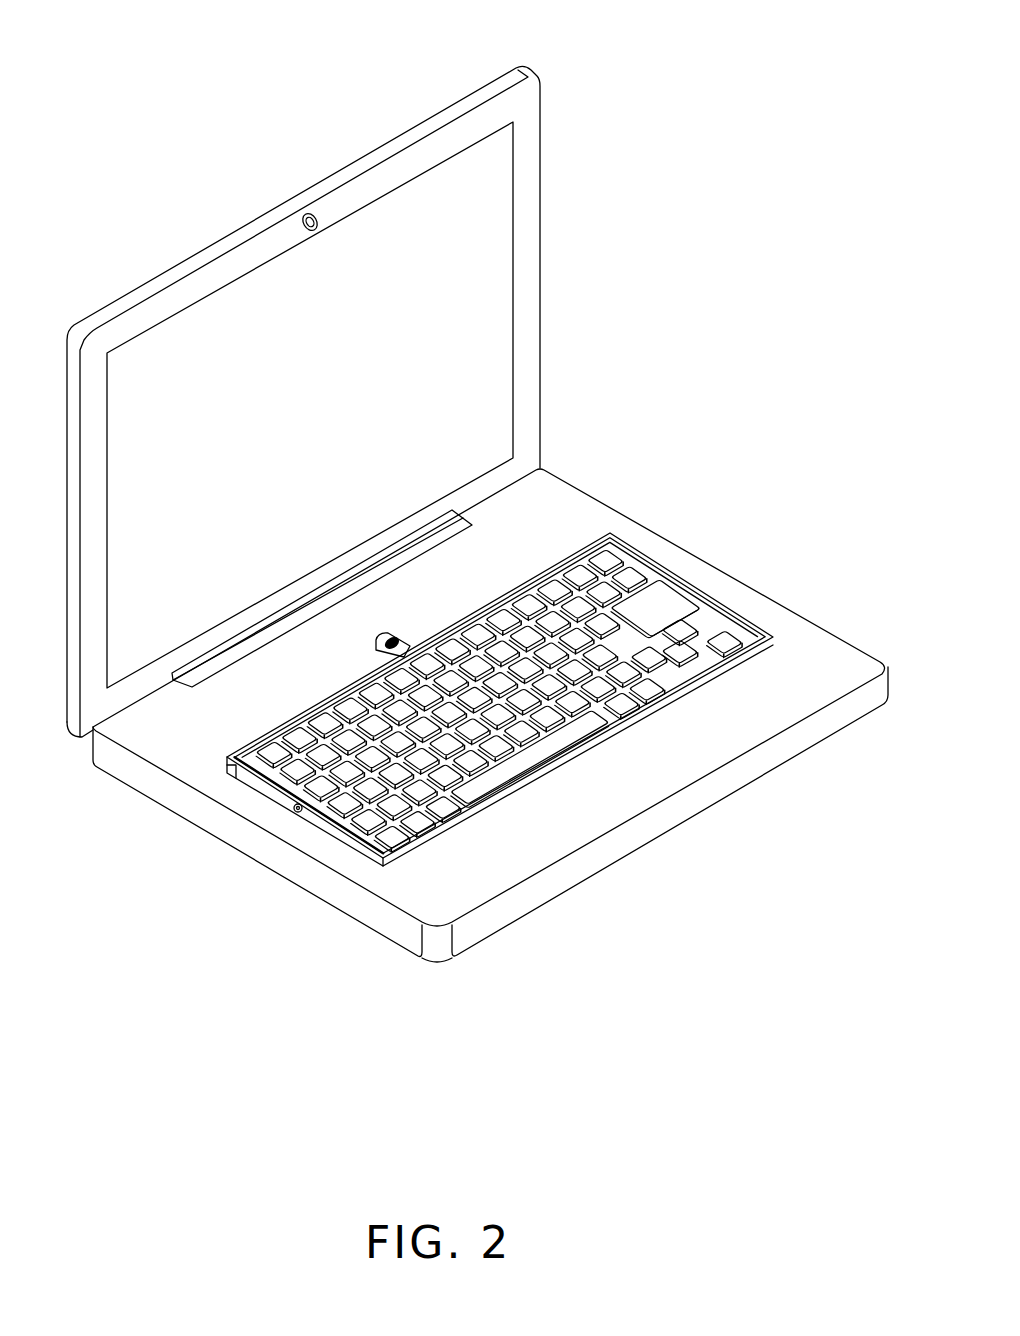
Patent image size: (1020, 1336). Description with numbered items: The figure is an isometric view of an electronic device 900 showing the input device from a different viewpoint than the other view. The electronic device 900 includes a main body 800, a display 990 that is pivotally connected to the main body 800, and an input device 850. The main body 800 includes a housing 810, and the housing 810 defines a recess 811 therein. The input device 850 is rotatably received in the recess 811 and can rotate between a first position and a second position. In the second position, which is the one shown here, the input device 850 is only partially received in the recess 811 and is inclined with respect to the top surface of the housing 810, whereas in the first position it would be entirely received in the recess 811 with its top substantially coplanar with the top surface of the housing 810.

The electronic device 900 is at (700, 45).
The display 990 is at (525, 232).
The main body 800 is at (709, 464).
The housing 810 is at (742, 737).
The input device 850 is at (665, 598).
The recess 811 is at (237, 777).